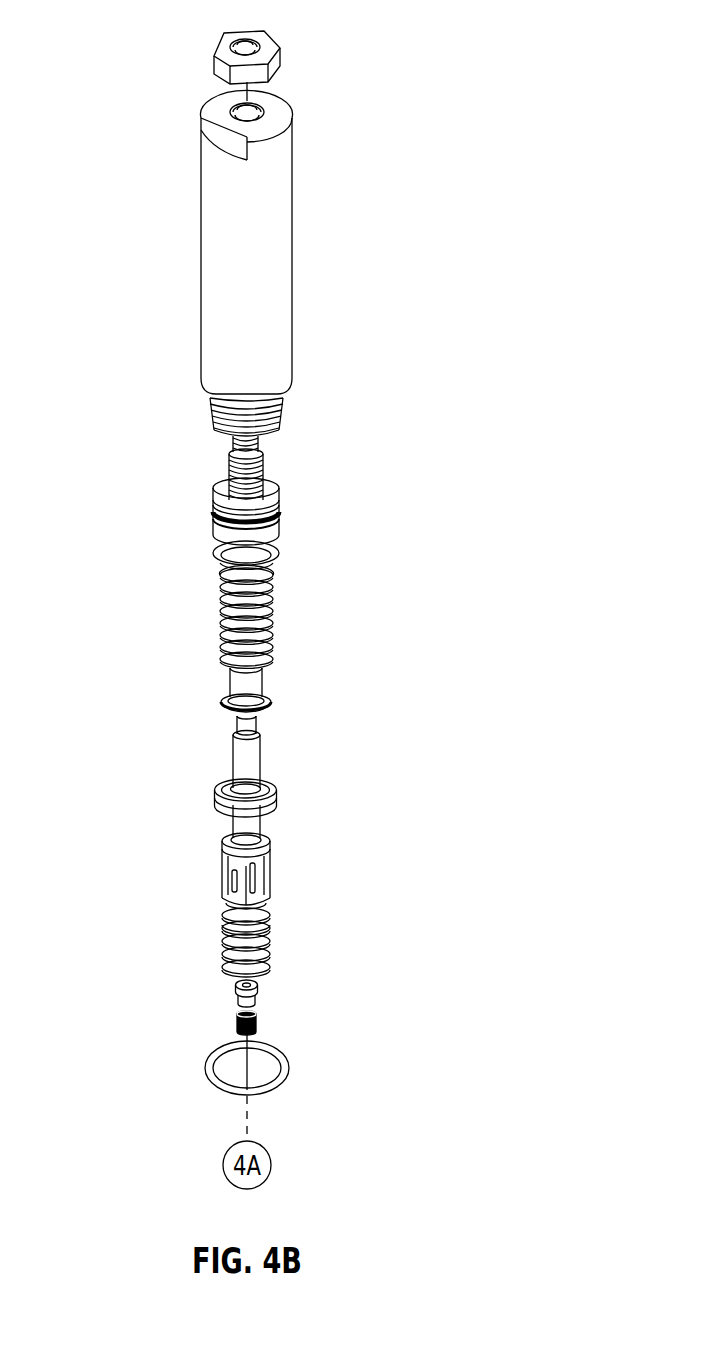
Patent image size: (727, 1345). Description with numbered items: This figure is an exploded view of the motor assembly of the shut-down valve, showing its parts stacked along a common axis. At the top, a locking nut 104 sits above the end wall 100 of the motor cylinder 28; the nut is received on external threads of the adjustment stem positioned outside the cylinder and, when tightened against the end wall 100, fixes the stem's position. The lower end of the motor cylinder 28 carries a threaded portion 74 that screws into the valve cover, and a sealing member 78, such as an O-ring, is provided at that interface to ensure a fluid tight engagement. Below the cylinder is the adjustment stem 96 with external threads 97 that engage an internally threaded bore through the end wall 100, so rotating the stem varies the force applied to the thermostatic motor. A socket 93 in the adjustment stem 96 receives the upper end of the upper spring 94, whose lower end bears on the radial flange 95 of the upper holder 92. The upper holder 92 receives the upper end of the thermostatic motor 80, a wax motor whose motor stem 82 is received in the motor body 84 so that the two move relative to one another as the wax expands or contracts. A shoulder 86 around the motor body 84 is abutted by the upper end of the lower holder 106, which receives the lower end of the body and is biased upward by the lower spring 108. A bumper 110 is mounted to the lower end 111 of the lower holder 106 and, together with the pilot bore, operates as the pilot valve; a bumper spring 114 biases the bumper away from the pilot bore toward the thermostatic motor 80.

The locking nut 104 is at (287, 41).
The end wall 100 is at (271, 114).
The motor cylinder 28 is at (270, 276).
The threaded portion 74 is at (284, 420).
The external threads 97 is at (264, 476).
The adjustment stem 96 is at (211, 511).
The socket 93 is at (273, 530).
The upper spring 94 is at (274, 608).
The upper holder 92 is at (255, 686).
The radial flange 95 is at (219, 701).
The motor stem 82 is at (250, 726).
The thermostatic motor 80 is at (231, 758).
The shoulder 86 is at (277, 808).
The motor body 84 is at (256, 836).
The lower holder 106 is at (219, 868).
The lower spring 108 is at (272, 952).
The lower end 111 is at (221, 948).
The bumper 110 is at (235, 990).
The bumper spring 114 is at (235, 1025).
The sealing member 78 is at (204, 1076).